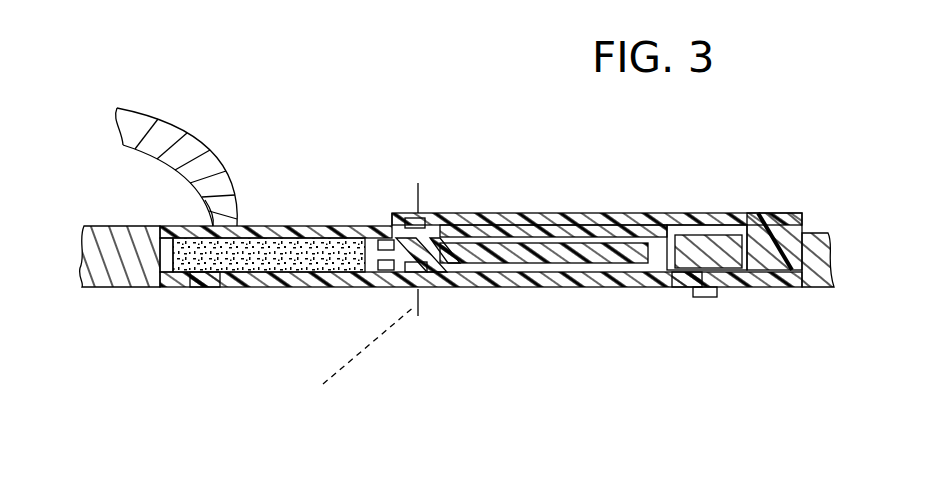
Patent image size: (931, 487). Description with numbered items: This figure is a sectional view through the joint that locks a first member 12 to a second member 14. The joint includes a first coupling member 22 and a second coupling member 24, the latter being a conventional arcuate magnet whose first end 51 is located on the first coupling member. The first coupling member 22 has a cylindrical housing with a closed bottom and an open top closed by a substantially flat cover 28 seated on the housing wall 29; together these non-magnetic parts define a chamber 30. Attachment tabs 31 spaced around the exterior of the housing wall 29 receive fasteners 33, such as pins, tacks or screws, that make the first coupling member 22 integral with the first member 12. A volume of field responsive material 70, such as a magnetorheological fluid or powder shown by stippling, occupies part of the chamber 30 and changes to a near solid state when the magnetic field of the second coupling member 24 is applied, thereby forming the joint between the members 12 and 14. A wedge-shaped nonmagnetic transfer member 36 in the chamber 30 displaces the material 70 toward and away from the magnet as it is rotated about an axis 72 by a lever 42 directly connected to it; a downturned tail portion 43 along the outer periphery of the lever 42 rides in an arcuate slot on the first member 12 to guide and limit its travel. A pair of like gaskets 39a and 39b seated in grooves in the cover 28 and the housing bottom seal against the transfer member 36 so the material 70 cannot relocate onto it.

The first member 12 is at (835, 265).
The second member 14 is at (135, 265).
The first coupling member 22 is at (427, 318).
The second coupling member 24 is at (113, 103).
The cover 28 is at (305, 227).
The housing wall 29 is at (203, 275).
The chamber 30 is at (313, 287).
The attachment tabs 31 is at (728, 270).
The fasteners 33 is at (705, 290).
The transfer member 36 is at (518, 262).
The gasket 39a is at (447, 217).
The gasket 39b is at (442, 280).
The lever 42 is at (648, 220).
The downturned tail portion 43 is at (786, 225).
The first end 51 is at (217, 212).
The field responsive material 70 is at (262, 240).
The axis 72 is at (351, 352).